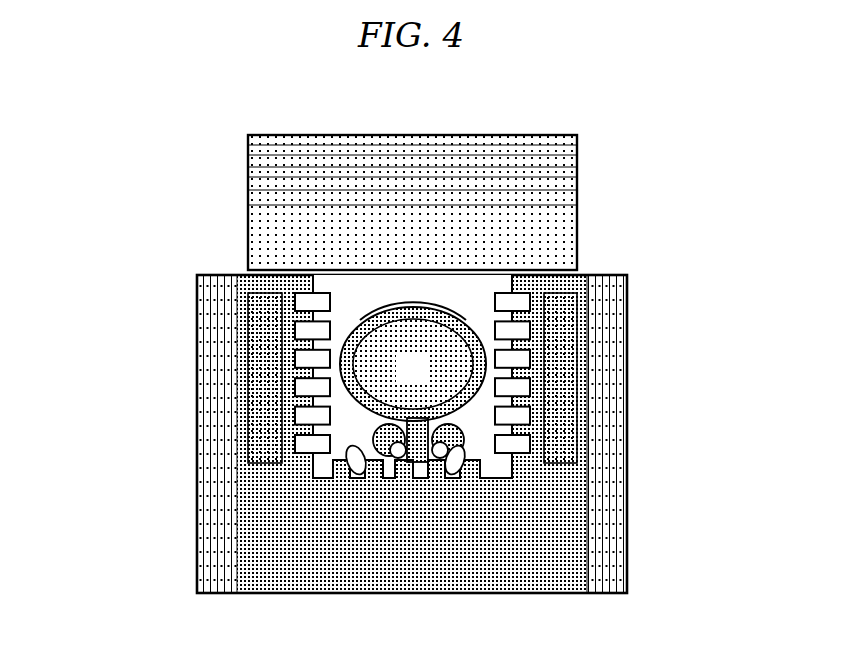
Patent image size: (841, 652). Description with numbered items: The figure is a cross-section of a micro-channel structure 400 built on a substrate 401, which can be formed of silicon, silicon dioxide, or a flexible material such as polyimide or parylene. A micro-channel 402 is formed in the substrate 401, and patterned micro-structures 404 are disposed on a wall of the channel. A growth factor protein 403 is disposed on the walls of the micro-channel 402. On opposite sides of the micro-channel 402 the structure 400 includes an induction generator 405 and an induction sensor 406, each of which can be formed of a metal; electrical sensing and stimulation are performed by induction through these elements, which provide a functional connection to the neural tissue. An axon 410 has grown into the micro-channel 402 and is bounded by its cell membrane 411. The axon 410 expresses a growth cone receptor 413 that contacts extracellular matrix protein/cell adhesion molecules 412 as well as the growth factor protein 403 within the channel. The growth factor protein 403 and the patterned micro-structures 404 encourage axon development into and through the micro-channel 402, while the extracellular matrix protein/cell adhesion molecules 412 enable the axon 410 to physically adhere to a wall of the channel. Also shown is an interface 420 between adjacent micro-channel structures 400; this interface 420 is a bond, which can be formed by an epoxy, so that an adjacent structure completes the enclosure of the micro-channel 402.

The micro-channel structure 400 is at (365, 361).
The substrate 401 is at (284, 558).
The micro-channel 402 is at (347, 308).
The growth factor protein 403 is at (464, 474).
The patterned micro-structures 404 is at (498, 296).
The induction generator 405 is at (576, 366).
The induction sensor 406 is at (258, 372).
The axon 410 is at (396, 383).
The cell membrane 411 is at (412, 307).
The extracellular matrix protein/cell adhesion molecules 412 is at (357, 474).
The growth cone receptor 413 is at (470, 433).
The interface 420 is at (230, 270).